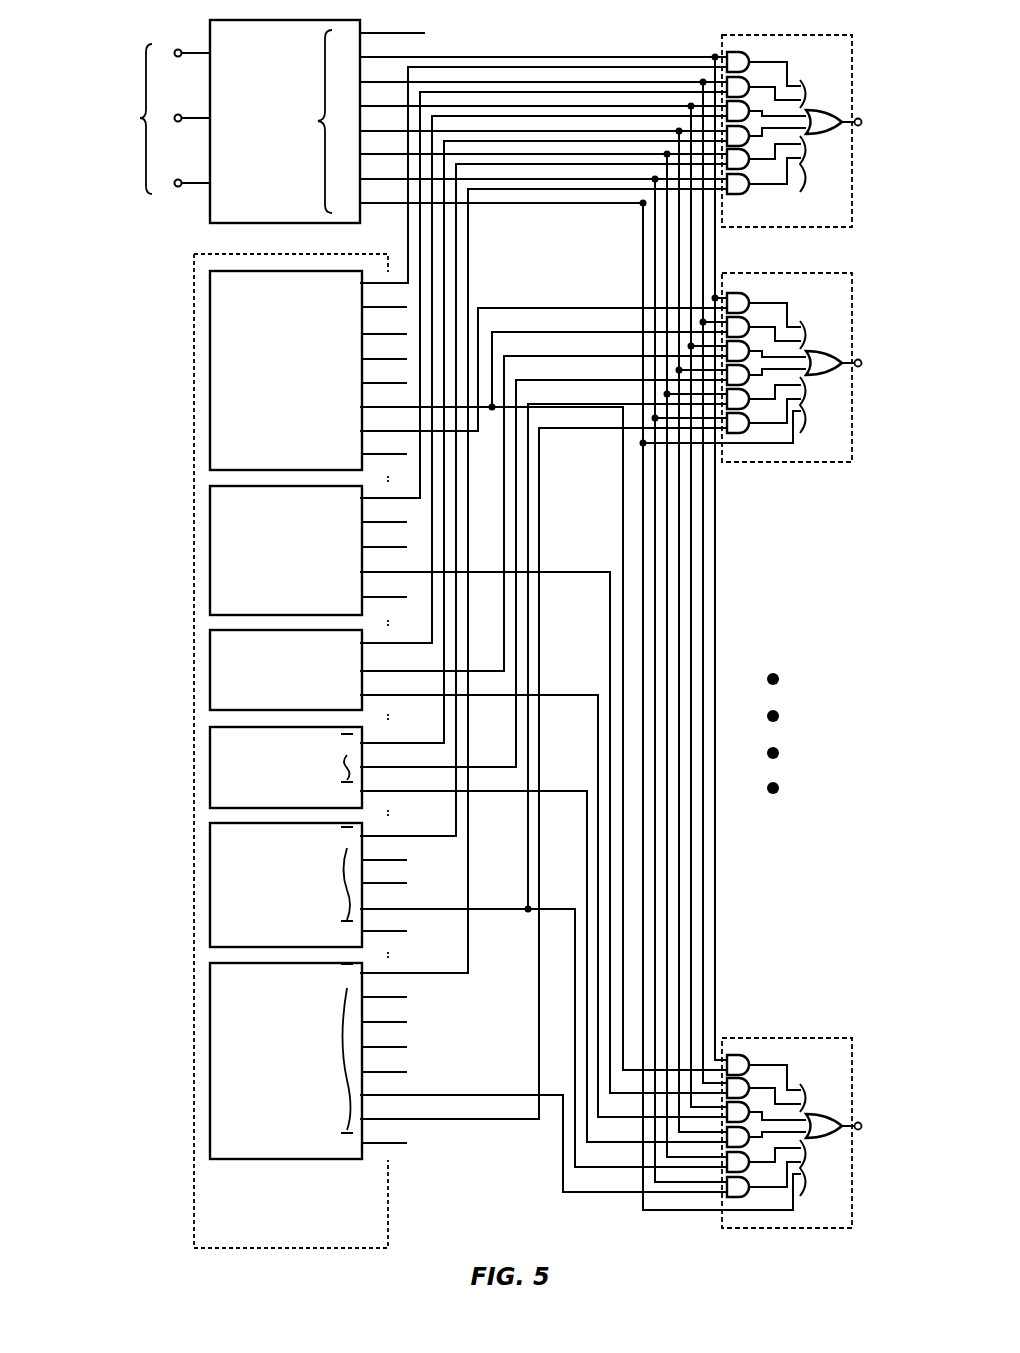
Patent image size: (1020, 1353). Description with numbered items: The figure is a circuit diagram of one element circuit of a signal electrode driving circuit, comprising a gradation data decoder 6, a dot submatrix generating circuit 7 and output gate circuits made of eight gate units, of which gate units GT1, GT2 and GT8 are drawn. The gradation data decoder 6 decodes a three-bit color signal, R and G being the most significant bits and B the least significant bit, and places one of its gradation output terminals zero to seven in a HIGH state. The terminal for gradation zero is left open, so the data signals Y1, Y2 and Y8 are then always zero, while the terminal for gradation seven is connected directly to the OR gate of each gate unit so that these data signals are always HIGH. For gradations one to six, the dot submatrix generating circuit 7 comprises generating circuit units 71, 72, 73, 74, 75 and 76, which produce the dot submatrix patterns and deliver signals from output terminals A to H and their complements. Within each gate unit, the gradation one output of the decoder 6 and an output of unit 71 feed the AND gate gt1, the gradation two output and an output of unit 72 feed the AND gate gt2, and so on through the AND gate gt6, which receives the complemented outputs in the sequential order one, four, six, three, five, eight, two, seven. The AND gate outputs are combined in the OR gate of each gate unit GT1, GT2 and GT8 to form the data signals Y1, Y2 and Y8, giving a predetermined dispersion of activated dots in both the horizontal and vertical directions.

The gradation data decoder 6 is at (210, 219).
The dot submatrix generating circuit 7 is at (194, 1199).
The generating circuit unit for Gradation 1 71 is at (210, 291).
The generating circuit unit for Gradation 2 72 is at (210, 506).
The generating circuit unit for Gradation 3 73 is at (210, 650).
The generating circuit unit for Gradation 4 74 is at (210, 747).
The generating circuit unit for Gradation 5 75 is at (210, 843).
The generating circuit unit for Gradation 6 76 is at (210, 983).
The gate unit GT1 is at (805, 163).
The gate unit GT2 is at (805, 398).
The gate unit GT8 is at (802, 1102).
The AND gate gt1 is at (735, 64).
The AND gate gt2 is at (740, 89).
The AND gate gt6 is at (737, 189).
The data signal Y1 is at (860, 126).
The data signal Y2 is at (860, 367).
The data signal Y8 is at (860, 1130).